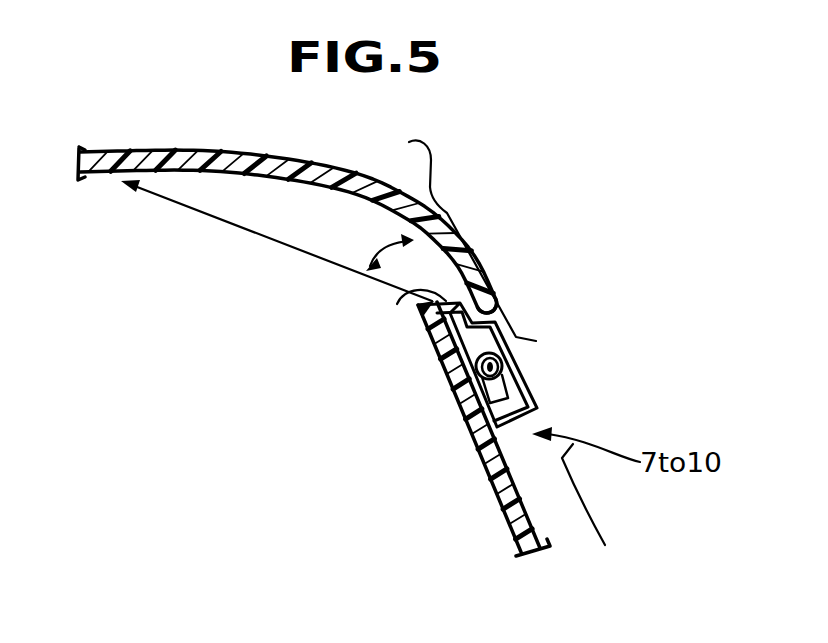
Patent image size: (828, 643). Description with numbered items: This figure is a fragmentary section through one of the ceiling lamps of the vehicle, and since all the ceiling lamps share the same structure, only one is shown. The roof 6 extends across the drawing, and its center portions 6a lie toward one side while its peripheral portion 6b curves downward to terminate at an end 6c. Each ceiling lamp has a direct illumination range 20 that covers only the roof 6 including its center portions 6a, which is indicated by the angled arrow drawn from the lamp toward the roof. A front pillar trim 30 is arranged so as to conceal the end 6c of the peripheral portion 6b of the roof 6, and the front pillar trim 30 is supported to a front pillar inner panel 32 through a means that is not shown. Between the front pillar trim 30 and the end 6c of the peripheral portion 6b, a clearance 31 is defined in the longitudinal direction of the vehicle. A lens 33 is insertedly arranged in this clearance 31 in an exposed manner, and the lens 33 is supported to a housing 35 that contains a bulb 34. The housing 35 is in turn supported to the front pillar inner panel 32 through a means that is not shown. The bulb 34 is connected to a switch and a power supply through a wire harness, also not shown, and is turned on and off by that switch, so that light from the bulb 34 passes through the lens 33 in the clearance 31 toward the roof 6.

The roof 6 is at (268, 162).
The center portions 6a is at (105, 158).
The peripheral portion 6b is at (449, 218).
The end 6c is at (500, 299).
The direct illumination range 20 is at (395, 260).
The front pillar trim 30 is at (495, 470).
The clearance 31 is at (397, 304).
The front pillar inner panel 32 is at (516, 327).
The lens 33 is at (424, 316).
The bulb 34 is at (506, 366).
The housing 35 is at (530, 383).